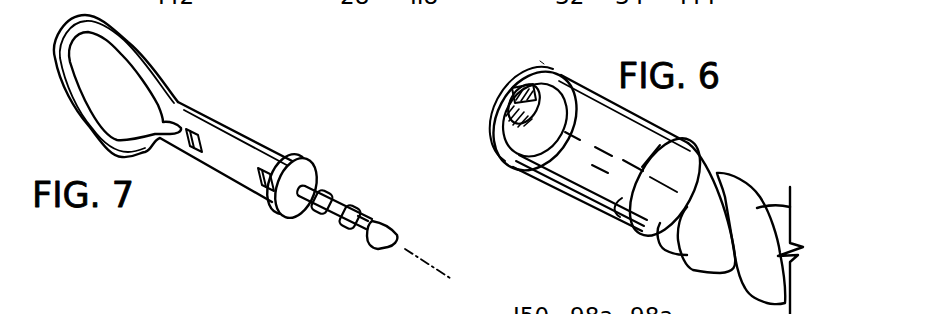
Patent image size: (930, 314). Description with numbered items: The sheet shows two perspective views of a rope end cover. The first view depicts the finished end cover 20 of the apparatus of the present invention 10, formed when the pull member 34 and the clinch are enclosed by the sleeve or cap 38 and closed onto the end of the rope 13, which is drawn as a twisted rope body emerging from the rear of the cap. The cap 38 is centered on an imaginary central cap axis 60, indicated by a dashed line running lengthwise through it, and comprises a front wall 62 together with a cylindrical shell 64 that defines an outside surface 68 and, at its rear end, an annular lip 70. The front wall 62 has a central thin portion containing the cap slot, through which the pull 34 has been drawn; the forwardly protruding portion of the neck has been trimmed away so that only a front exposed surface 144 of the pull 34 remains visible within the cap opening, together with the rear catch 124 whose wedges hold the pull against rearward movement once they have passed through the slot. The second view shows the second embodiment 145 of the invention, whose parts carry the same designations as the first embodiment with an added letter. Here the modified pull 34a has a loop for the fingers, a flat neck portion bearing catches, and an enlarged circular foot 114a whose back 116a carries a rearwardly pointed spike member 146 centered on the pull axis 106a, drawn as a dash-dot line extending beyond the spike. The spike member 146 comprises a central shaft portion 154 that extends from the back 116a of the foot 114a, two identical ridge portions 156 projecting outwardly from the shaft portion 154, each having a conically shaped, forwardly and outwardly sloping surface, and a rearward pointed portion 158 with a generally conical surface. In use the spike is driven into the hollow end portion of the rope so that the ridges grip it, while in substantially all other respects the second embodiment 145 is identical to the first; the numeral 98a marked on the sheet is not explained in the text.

In FIG. 6, the apparatus of the present invention 10 is at (539, 55).
In FIG. 6, the finished end cover 20 is at (526, 62).
In FIG. 6, the front exposed surface 144 is at (509, 87).
In FIG. 6, the rear catch 124 is at (508, 96).
In FIG. 6, the pull member 34 is at (499, 109).
In FIG. 6, the front wall 62 is at (499, 142).
In FIG. 6, the central cap axis 60 is at (686, 141).
In FIG. 6, the rope 13 is at (740, 183).
In FIG. 6, the sleeve or cap 38 is at (564, 203).
In FIG. 6, the cylindrical shell 64 is at (619, 208).
In FIG. 6, the outside surface 68 is at (631, 228).
In FIG. 6, the annular lip 70 is at (655, 262).
In FIG. 6, the lower element 98a is at (488, 313).
In FIG. 7, the pull 34a is at (193, 93).
In FIG. 7, the second embodiment 145 is at (228, 105).
In FIG. 7, the foot 114a is at (311, 171).
In FIG. 7, the back 116a is at (313, 181).
In FIG. 7, the central shaft portion 154 is at (320, 218).
In FIG. 7, the ridge portions 156 is at (327, 198).
In FIG. 7, the spike member 146 is at (348, 233).
In FIG. 7, the rearward pointed portion 158 is at (391, 228).
In FIG. 7, the pull axis 106a is at (405, 248).